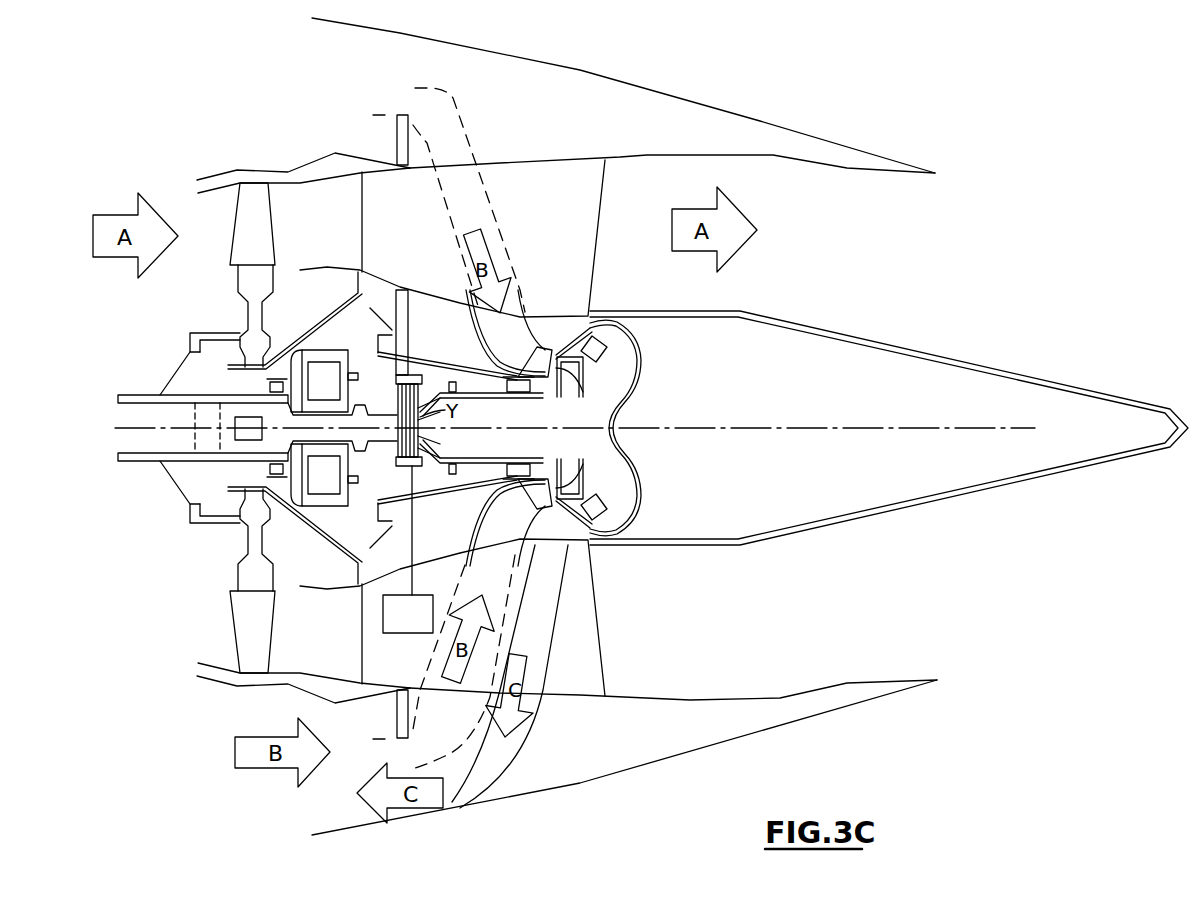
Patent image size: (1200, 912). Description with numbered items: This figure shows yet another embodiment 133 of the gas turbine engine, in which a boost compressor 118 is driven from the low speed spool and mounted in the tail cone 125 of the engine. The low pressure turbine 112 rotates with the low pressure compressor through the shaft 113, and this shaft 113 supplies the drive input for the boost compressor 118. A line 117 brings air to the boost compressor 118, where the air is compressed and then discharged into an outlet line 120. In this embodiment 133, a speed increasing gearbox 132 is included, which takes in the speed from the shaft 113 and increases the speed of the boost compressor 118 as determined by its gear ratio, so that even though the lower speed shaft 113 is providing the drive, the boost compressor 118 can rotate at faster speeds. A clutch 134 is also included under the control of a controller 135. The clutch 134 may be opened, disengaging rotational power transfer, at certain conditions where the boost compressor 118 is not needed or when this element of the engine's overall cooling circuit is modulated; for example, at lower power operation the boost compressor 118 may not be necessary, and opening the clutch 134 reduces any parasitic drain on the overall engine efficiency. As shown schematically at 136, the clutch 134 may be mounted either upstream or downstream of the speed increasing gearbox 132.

The low pressure turbine 112 is at (250, 228).
The shaft 113 is at (190, 398).
The line 117 is at (457, 140).
The boost compressor 118 is at (590, 484).
The outlet line 120 is at (537, 608).
The tail cone 125 is at (750, 360).
The speed increasing gearbox 132 is at (330, 497).
The embodiment 133 is at (613, 72).
The clutch 134 is at (418, 427).
The controller 135 is at (383, 617).
The alternative clutch location 136 is at (247, 418).